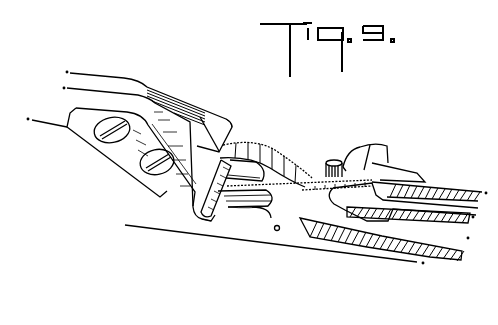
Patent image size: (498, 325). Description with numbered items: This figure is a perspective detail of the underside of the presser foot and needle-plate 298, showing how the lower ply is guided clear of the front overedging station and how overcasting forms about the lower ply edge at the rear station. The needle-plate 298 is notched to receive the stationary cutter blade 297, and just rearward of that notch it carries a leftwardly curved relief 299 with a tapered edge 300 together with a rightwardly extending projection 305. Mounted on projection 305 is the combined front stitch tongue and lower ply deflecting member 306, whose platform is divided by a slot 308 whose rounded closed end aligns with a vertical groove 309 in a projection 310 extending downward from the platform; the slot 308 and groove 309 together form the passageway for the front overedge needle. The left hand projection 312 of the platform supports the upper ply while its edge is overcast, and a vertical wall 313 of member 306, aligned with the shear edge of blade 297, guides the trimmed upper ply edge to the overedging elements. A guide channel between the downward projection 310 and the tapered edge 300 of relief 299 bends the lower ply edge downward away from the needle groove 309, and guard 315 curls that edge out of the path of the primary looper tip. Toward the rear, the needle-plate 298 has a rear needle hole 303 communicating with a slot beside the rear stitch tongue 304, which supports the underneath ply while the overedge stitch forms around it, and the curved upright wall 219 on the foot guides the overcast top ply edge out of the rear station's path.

The curved upright wall 219 is at (388, 147).
The stationary cutter blade 297 is at (137, 190).
The needle-plate 298 is at (387, 250).
The leftwardly curved relief 299 is at (297, 193).
The tapered edge 300 is at (272, 217).
The rear needle hole 303 is at (326, 194).
The rear stitch tongue 304 is at (360, 170).
The rightwardly laterally extending projection 305 is at (100, 101).
The combined front overedge station stitch tongue and lower ply edge deflecting memb 306 is at (160, 100).
The slot 308 is at (248, 190).
The vertical groove 309 is at (200, 217).
The projection 310 is at (197, 198).
The left hand projection 312 is at (247, 166).
The vertical wall 313 is at (227, 123).
The guard 315 is at (293, 190).